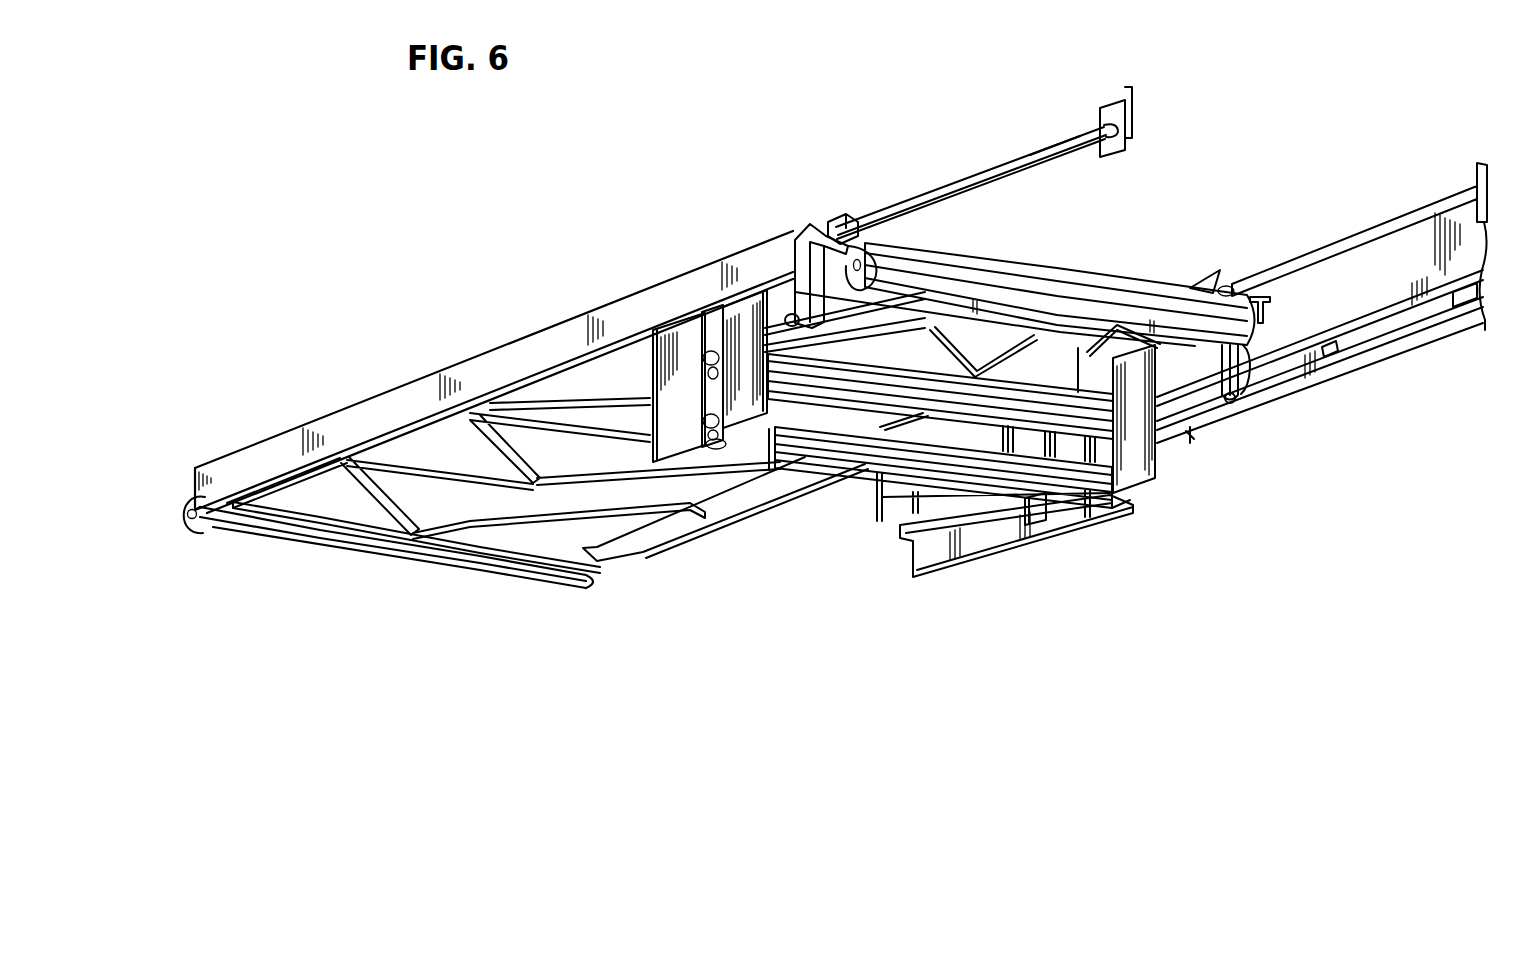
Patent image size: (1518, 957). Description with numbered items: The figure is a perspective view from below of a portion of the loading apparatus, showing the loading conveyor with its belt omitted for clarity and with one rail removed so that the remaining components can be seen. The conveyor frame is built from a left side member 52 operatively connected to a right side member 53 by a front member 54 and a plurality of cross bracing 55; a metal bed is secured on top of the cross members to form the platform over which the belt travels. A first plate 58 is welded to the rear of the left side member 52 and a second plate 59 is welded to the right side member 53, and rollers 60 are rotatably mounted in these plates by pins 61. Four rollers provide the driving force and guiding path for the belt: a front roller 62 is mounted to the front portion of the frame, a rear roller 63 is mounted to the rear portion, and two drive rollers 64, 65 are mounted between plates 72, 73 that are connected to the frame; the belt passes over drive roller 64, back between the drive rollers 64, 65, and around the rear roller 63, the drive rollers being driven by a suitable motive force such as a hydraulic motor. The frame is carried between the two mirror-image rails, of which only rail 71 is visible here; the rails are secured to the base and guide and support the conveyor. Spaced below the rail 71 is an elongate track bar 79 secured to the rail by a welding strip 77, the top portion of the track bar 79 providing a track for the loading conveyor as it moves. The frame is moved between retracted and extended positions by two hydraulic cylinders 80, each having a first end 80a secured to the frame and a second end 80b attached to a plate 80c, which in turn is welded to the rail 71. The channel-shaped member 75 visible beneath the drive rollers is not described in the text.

The left side member 52 is at (345, 412).
The right side member 53 is at (623, 548).
The front member 54 is at (318, 516).
The cross bracing 55 is at (613, 404).
The first plate 58 is at (808, 238).
The second plate 59 is at (1246, 372).
The rollers 60 is at (790, 316).
The pins 61 is at (1215, 386).
The front roller 62 is at (495, 566).
The rear roller 63 is at (1011, 278).
The drive roller 64 is at (869, 378).
The drive roller 65 is at (868, 470).
The rail 71 is at (1356, 312).
The plate 72 is at (672, 338).
The plate 73 is at (742, 313).
The bottom channel beam 75 is at (1006, 538).
The welding strip 77 is at (1330, 348).
The track bar 79 is at (1190, 441).
The hydraulic cylinder 80 is at (971, 176).
The first end 80a is at (832, 226).
The second end 80b is at (1056, 144).
The plate 80c is at (1133, 118).